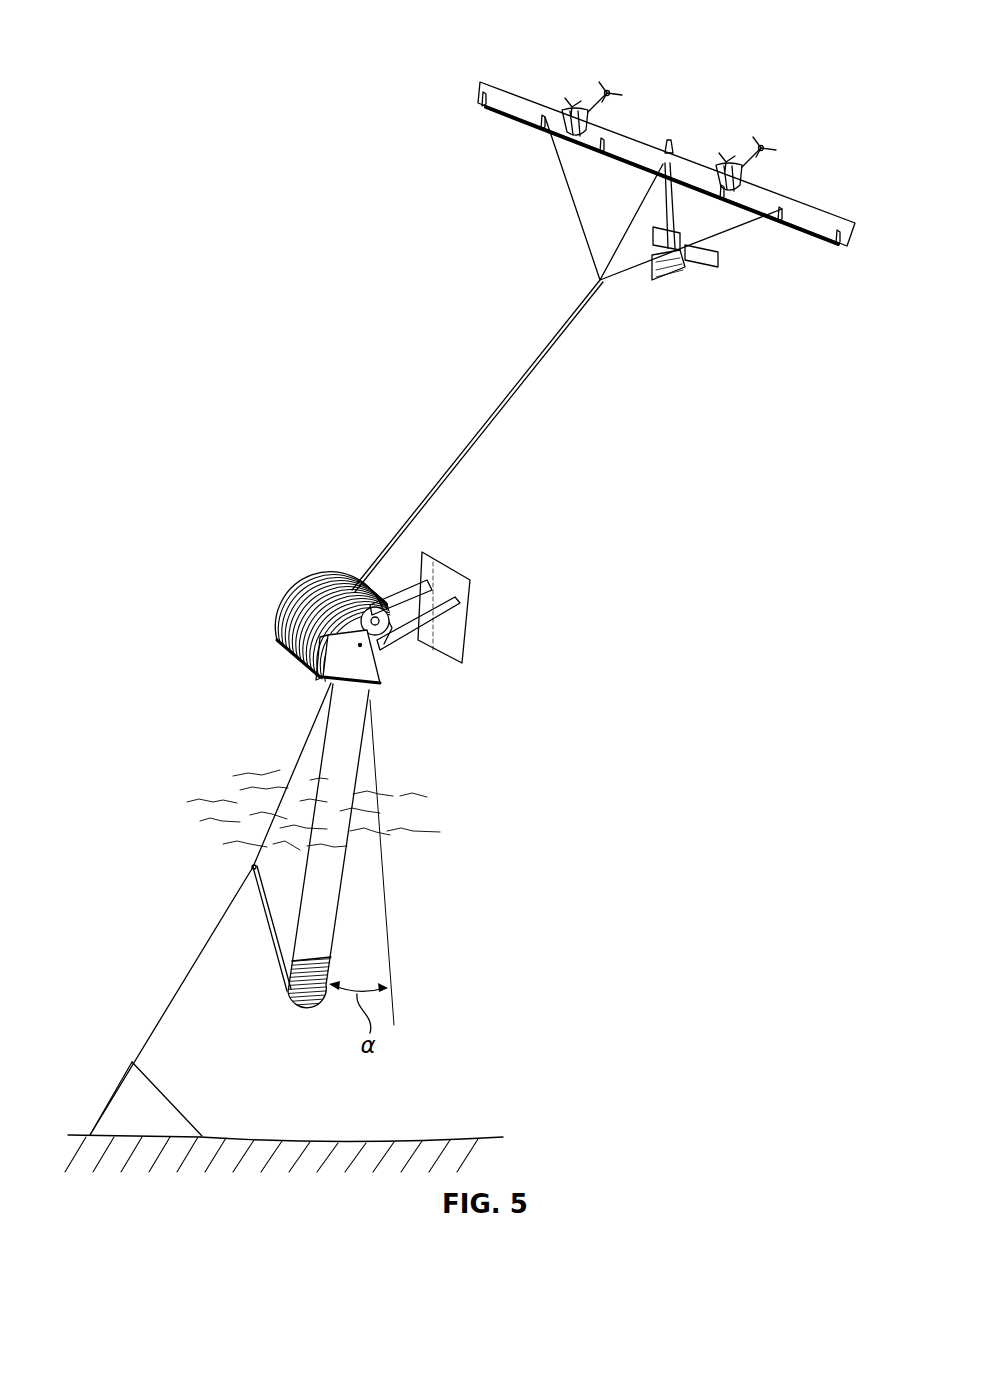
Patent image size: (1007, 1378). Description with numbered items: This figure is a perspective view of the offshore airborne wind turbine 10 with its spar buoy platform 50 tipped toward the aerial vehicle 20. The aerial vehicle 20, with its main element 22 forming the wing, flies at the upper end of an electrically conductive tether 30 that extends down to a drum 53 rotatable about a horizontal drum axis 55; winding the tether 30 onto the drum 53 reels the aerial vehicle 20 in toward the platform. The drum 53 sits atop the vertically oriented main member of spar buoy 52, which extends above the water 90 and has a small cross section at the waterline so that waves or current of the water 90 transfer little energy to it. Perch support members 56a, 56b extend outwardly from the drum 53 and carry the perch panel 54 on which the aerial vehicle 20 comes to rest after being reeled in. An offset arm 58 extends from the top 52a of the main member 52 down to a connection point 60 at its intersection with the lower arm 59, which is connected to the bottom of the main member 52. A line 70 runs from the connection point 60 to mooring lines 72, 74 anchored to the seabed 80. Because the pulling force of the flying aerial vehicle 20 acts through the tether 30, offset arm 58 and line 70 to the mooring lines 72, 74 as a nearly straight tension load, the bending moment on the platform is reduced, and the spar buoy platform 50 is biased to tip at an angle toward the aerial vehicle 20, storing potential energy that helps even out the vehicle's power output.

The offshore airborne wind turbine 10 is at (378, 77).
The aerial vehicle 20 is at (714, 106).
The main element 22 is at (773, 193).
The tether 30 is at (527, 372).
The spar buoy platform 50 is at (233, 489).
The main member of spar buoy 52 is at (340, 752).
The top of main member 52a is at (356, 695).
The drum 53 is at (370, 613).
The perch panel 54 is at (464, 587).
The drum axis 55 is at (329, 601).
The perch support member 56a is at (444, 613).
The perch support member 56b is at (428, 583).
The offset arm 58 is at (295, 772).
The lower arm 59 is at (268, 922).
The connection point 60 is at (252, 865).
The line 70 is at (182, 992).
The mooring line 72 is at (113, 1098).
The mooring line 74 is at (173, 1097).
The seabed 80 is at (225, 1138).
The water 90 is at (202, 795).